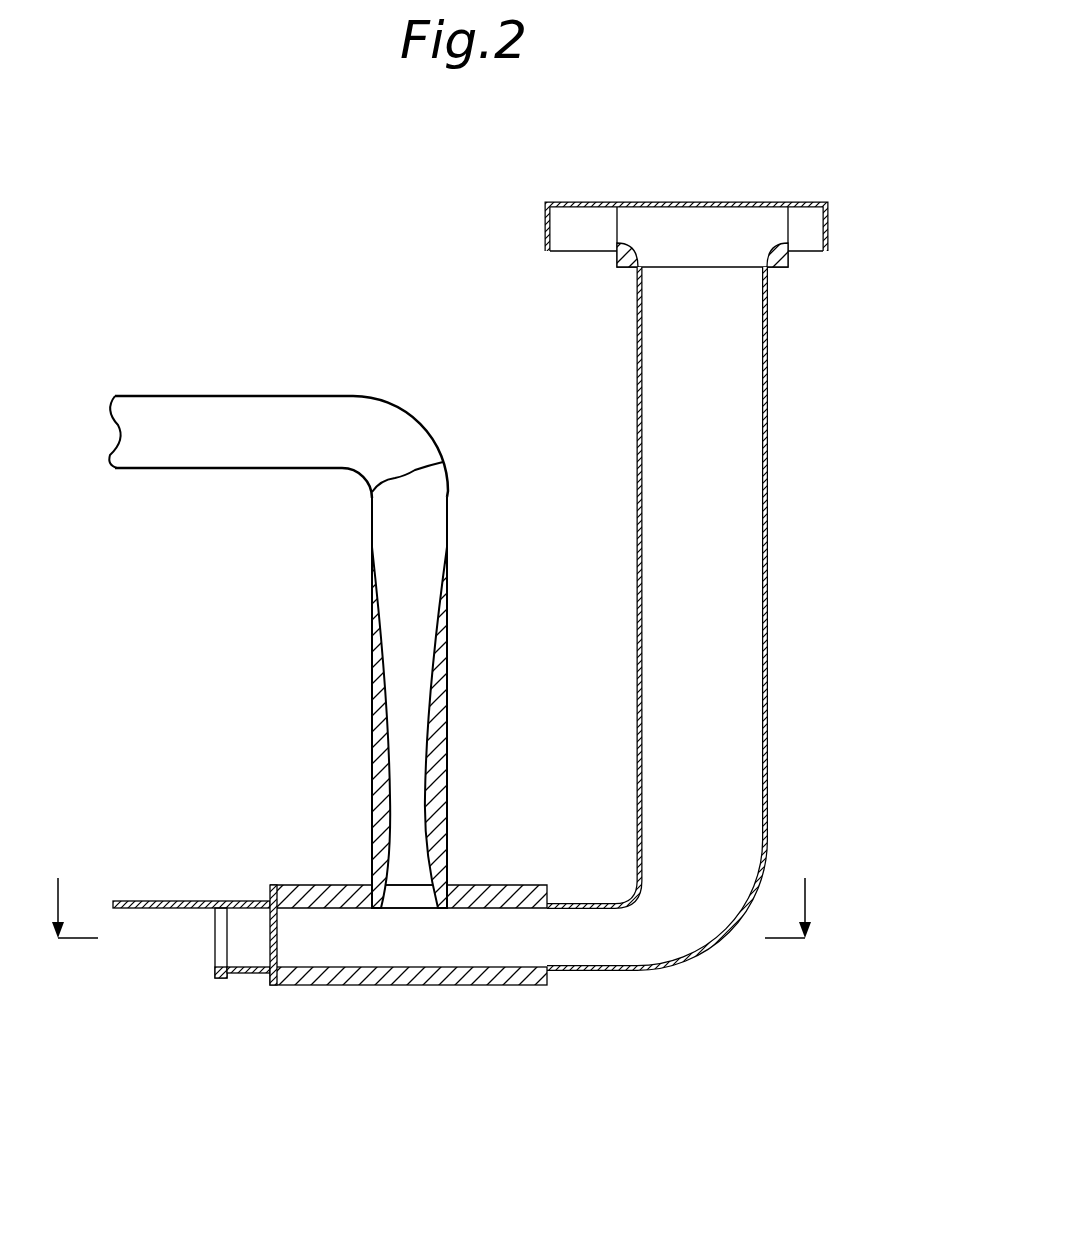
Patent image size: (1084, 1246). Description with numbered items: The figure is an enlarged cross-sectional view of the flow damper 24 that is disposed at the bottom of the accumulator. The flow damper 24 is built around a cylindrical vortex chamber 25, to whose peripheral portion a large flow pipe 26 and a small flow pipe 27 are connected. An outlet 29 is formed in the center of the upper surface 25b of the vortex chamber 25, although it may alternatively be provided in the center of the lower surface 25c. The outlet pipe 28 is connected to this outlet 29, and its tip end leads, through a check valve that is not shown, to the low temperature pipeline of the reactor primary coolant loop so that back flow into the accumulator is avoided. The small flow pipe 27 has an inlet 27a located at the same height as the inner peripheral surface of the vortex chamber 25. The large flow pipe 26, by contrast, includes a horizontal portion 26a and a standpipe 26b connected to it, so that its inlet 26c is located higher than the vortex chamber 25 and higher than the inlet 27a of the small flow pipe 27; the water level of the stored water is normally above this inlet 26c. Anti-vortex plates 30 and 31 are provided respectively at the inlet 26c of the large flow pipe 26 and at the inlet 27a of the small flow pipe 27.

The flow damper 24 is at (332, 322).
The vortex chamber 25 is at (297, 885).
The upper surface of the vortex chamber 25b is at (358, 908).
The lower surface of the vortex chamber 25c is at (353, 966).
The large flow pipe 26 is at (613, 970).
The horizontal portion 26a is at (585, 898).
The standpipe 26b is at (768, 593).
The inlet of the large flow pipe 26c is at (707, 228).
The small flow pipe 27 is at (252, 972).
The inlet of the small flow pipe 27a is at (232, 936).
The outlet pipe 28 is at (372, 621).
The outlet 29 is at (431, 912).
The anti-vortex plate 30 is at (585, 203).
The anti-vortex plate 31 is at (168, 898).